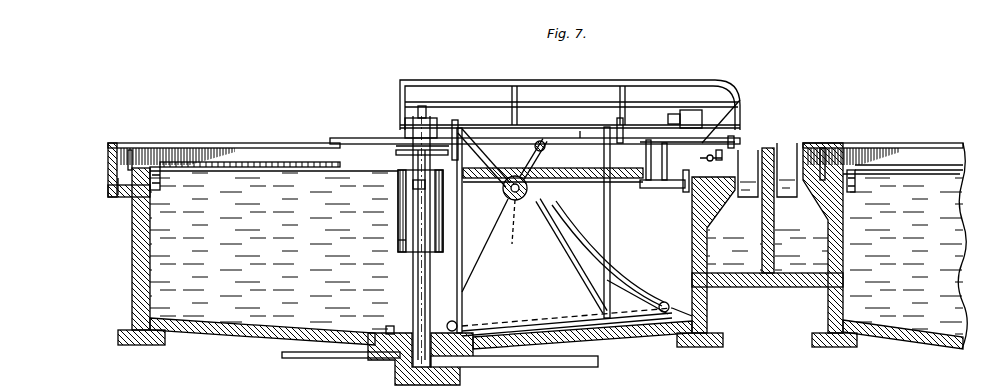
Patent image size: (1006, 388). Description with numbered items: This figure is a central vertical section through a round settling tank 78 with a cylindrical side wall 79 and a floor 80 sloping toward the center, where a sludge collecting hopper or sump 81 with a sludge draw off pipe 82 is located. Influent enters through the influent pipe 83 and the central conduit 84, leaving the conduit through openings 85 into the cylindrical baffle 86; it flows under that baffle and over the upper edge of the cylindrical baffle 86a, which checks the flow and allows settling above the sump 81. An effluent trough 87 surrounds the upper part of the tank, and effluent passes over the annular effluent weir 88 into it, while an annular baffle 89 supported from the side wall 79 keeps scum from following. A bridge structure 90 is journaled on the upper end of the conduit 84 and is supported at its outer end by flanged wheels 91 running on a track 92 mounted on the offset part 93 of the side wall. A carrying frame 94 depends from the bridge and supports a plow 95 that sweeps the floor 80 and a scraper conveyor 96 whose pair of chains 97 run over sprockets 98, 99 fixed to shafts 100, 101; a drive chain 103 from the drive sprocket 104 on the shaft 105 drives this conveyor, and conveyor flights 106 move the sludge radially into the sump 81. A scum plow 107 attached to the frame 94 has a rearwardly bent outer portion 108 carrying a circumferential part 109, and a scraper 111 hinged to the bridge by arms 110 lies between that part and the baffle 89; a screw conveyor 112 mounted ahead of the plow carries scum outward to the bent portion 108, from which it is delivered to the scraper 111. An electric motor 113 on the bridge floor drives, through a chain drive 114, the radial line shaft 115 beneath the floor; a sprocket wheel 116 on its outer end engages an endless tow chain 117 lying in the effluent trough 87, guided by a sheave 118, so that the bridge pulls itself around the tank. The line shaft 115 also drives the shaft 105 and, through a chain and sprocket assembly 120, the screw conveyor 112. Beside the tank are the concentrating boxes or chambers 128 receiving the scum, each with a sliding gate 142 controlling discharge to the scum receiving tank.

The round settling tank 78 is at (556, 254).
The side wall 79 is at (134, 277).
The floor 80 is at (234, 330).
The sludge collecting hopper or sump 81 is at (388, 326).
The sludge draw off pipe 82 is at (350, 358).
The influent pipe 83 is at (560, 367).
The conduit 84 is at (412, 282).
The openings 85 is at (412, 189).
The cylindrical baffle 86 is at (398, 163).
The cylindrical baffle 86a is at (397, 240).
The effluent trough 87 is at (131, 150).
The effluent weir 88 is at (153, 167).
The annular baffle 89 is at (165, 179).
The bridge structure 90 is at (400, 129).
The flanged wheels 91 is at (736, 141).
The track 92 is at (112, 143).
The offset part of the side wall 93 is at (110, 162).
The carrying frame 94 is at (457, 273).
The plow 95 is at (510, 319).
The scraper conveyor 96 is at (571, 240).
The chains 97 is at (486, 250).
The sprocket 98 is at (518, 222).
The sprocket 99 is at (673, 298).
The shaft 100 is at (504, 198).
The shaft 101 is at (668, 330).
The drive chain 103 is at (548, 168).
The drive sprocket 104 is at (538, 141).
The shaft 105 is at (530, 169).
The conveyor flights 106 is at (600, 268).
The scum plow 107 is at (585, 183).
The outer portion of the scum plow 108 is at (645, 165).
The part 109 is at (652, 189).
The arms 110 is at (640, 140).
The scraper 111 is at (685, 192).
The screw conveyor 112 is at (488, 160).
The electric motor 113 is at (703, 110).
The chain drive 114 is at (738, 106).
The radial line shaft 115 is at (581, 139).
The sprocket wheel 116 is at (740, 149).
The endless tow chain 117 is at (128, 198).
The sheave 118 is at (706, 158).
The chain and sprocket assembly 120 is at (432, 136).
The concentrating boxes or chambers 128 is at (767, 250).
The sliding gate 142 is at (789, 149).